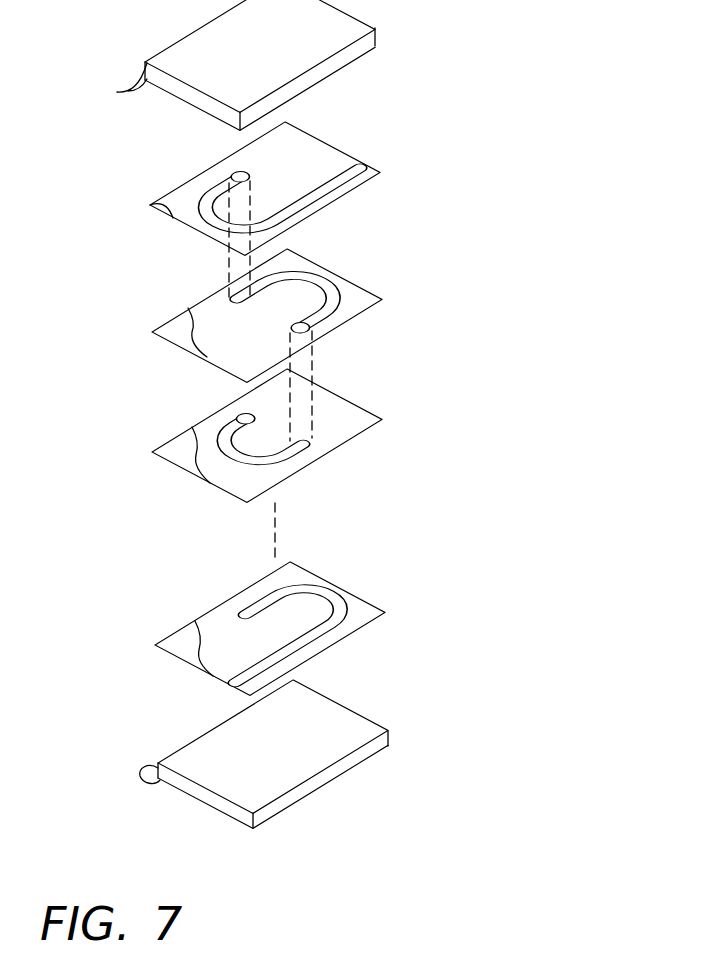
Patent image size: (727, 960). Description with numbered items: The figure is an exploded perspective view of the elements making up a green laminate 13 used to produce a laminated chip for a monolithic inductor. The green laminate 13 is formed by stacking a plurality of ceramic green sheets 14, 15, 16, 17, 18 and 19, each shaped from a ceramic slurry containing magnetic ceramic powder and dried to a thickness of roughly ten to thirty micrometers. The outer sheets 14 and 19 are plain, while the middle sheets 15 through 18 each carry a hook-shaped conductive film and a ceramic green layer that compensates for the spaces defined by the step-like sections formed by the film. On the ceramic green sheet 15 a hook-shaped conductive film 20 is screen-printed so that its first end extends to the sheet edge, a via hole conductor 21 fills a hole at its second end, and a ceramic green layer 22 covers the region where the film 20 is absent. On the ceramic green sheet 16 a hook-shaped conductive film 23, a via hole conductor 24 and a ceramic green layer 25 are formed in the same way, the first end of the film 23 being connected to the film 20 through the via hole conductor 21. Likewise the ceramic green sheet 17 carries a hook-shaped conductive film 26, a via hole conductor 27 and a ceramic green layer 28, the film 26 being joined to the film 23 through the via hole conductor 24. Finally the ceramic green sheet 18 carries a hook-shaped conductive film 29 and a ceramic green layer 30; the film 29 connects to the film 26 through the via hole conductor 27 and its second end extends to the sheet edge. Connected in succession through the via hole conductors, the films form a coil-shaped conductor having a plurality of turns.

The green laminate 13 is at (118, 34).
The ceramic green sheet 14 is at (231, 65).
The ceramic green sheet 15 is at (246, 181).
The ceramic green sheet 16 is at (256, 303).
The ceramic green sheet 17 is at (258, 440).
The ceramic green sheet 18 is at (268, 619).
The ceramic green sheet 19 is at (248, 754).
The hook-shaped conductive film 20 is at (318, 188).
The via hole conductor 21 is at (234, 168).
The ceramic green layer 22 is at (183, 188).
The hook-shaped conductive film 23 is at (320, 275).
The via hole conductor 24 is at (312, 326).
The ceramic green layer 25 is at (213, 307).
The hook-shaped conductive film 26 is at (293, 462).
The via hole conductor 27 is at (247, 405).
The ceramic green layer 28 is at (197, 437).
The hook-shaped conductive film 29 is at (327, 592).
The ceramic green layer 30 is at (219, 609).